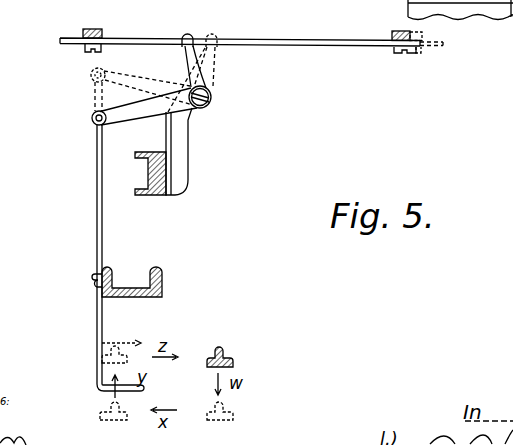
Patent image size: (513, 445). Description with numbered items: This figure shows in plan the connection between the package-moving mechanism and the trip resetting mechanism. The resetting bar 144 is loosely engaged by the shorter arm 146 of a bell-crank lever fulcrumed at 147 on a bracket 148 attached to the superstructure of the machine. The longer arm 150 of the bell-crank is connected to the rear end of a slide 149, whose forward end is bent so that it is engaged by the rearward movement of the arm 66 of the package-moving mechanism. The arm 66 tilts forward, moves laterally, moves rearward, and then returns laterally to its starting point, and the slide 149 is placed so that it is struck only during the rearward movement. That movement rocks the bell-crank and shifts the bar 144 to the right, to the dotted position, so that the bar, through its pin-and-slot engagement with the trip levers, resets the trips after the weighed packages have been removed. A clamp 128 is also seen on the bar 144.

The bar 144 is at (298, 39).
The clamp collar 128 is at (94, 29).
The shorter arm 146 is at (200, 68).
The fulcrum 147 is at (209, 104).
The bracket 148 is at (186, 157).
The slide 149 is at (103, 235).
The longer arm 150 is at (134, 114).
The arm 66 is at (224, 352).